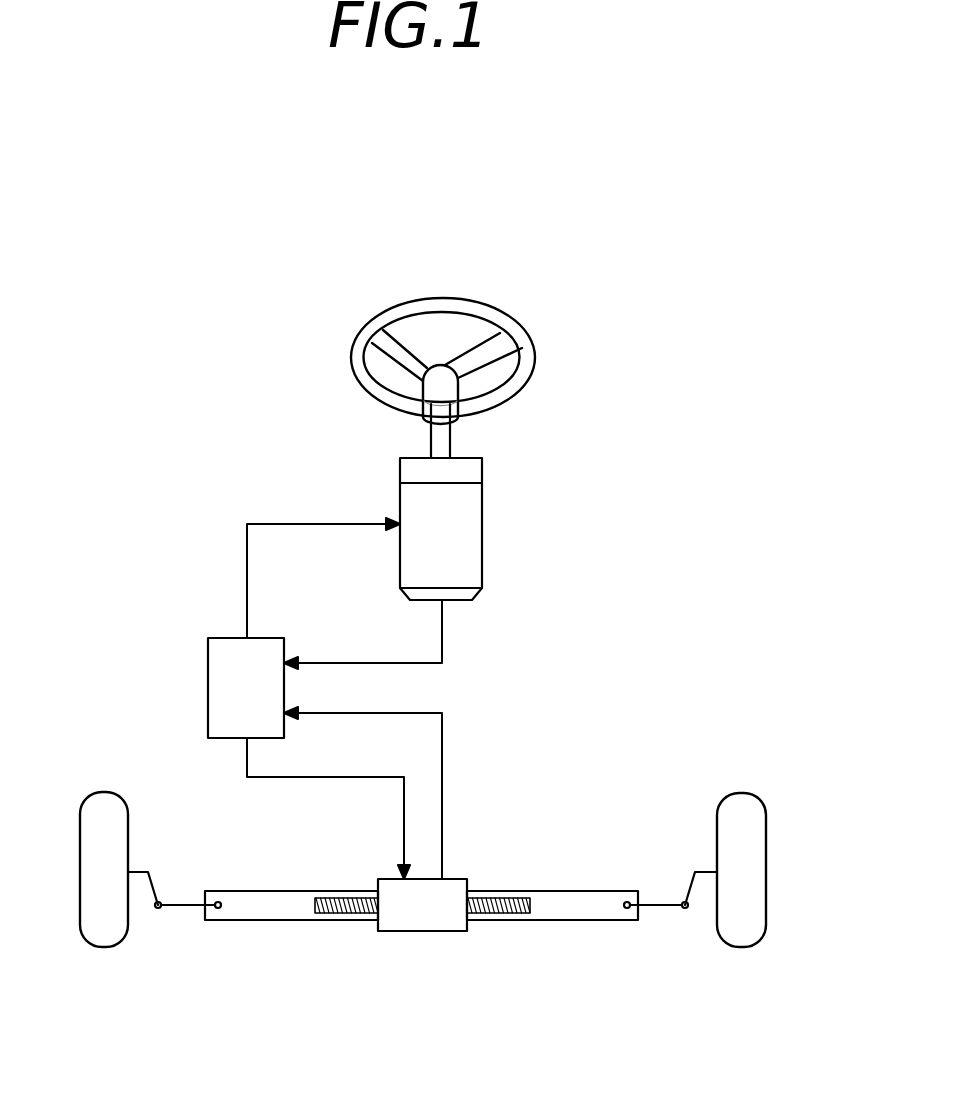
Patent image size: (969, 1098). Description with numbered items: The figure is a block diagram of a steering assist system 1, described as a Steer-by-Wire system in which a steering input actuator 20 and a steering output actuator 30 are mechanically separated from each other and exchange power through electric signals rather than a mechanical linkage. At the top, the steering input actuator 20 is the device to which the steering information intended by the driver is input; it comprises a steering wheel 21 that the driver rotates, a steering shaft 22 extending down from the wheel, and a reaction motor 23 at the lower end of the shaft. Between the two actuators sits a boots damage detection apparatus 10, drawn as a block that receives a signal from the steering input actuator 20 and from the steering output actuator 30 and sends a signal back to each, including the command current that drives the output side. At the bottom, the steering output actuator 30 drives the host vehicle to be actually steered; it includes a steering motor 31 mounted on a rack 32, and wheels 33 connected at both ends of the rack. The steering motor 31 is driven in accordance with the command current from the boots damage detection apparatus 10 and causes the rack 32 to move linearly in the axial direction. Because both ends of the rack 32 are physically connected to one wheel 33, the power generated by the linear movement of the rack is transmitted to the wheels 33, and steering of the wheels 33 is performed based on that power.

The steering assist system 1 is at (152, 232).
The boots damage detection apparatus 10 is at (208, 685).
The steering input actuator 20 is at (550, 295).
The steering wheel 21 is at (443, 307).
The steering shaft 22 is at (483, 523).
The reaction motor 23 is at (455, 602).
The steering output actuator 30 is at (458, 962).
The steering motor 31 is at (423, 935).
The rack 32 is at (290, 922).
The wheels 33 is at (102, 950).